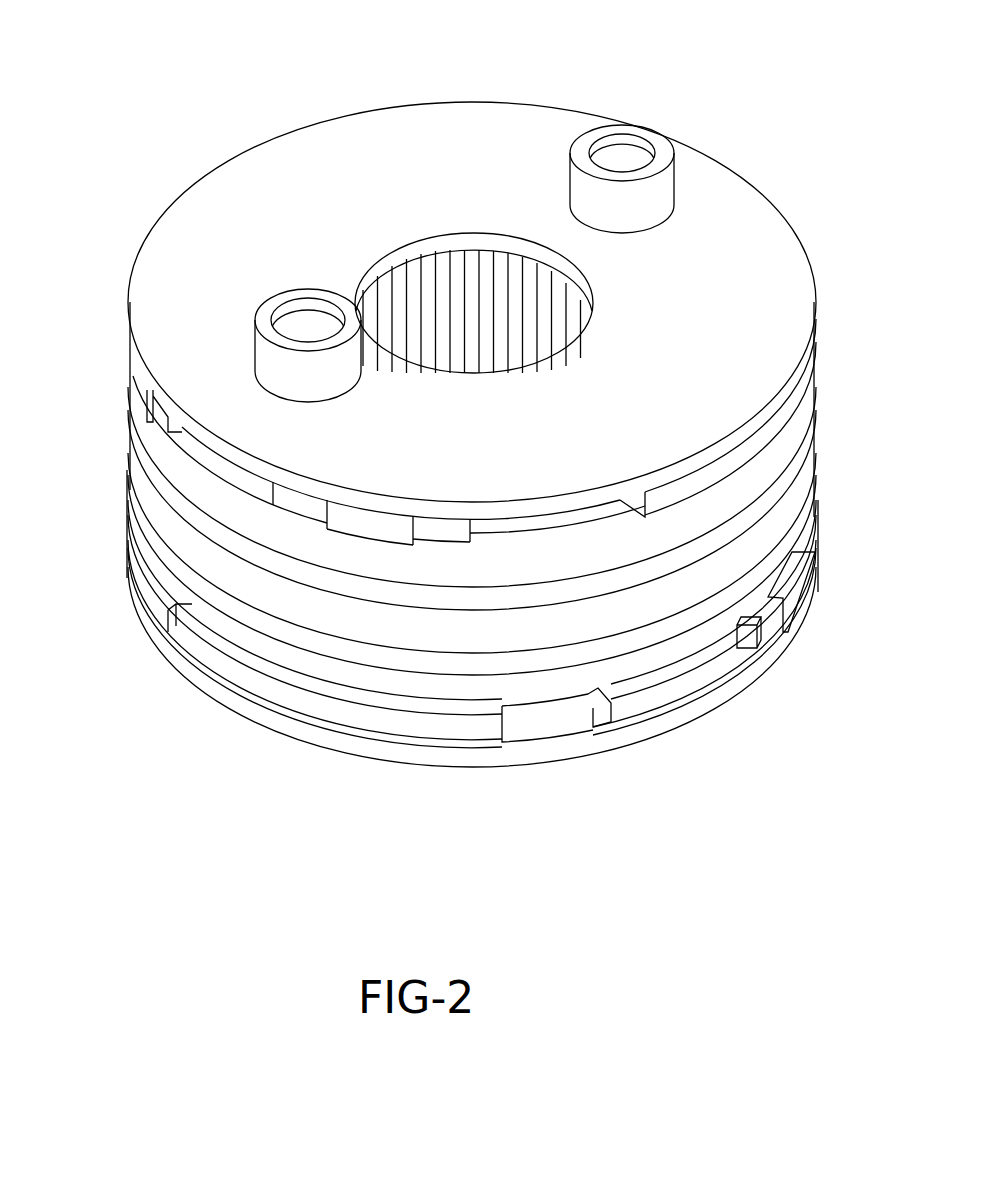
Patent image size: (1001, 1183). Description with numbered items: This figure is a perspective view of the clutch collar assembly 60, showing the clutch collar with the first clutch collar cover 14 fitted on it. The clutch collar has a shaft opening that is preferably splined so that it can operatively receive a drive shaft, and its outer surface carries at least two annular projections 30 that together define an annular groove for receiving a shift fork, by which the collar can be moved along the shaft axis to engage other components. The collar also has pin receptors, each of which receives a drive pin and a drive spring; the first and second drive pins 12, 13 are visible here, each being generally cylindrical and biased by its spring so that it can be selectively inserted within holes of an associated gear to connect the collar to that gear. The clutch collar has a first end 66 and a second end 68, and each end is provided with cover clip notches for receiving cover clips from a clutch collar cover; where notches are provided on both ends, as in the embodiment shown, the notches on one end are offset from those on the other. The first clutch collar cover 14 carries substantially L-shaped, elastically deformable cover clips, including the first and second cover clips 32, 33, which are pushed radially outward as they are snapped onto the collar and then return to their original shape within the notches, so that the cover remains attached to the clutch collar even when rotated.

The clutch collar assembly 60 is at (220, 128).
The first drive pin 12 is at (667, 172).
The second drive pin 13 is at (273, 357).
The first clutch collar cover 14 is at (760, 295).
The first end 66 is at (767, 437).
The annular projections 30 is at (767, 502).
The first cover clip 32 is at (355, 525).
The second cover clip 33 is at (135, 398).
The second end 68 is at (795, 622).